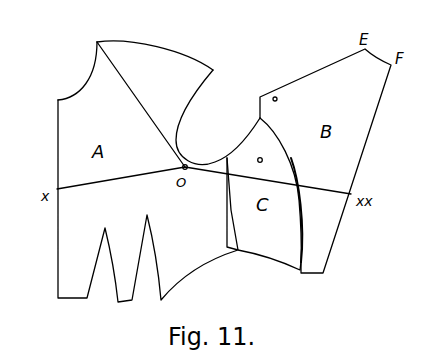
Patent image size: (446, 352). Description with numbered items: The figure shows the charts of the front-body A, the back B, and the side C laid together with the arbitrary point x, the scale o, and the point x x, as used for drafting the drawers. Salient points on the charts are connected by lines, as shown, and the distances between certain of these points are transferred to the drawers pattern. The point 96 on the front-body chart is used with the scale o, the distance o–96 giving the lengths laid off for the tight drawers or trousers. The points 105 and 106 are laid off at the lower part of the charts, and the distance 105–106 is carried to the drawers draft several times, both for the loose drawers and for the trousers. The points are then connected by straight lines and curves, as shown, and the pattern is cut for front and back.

The pattern chart point 96 is at (135, 61).
The pattern chart point 105 is at (305, 271).
The pattern chart point 106 is at (324, 272).